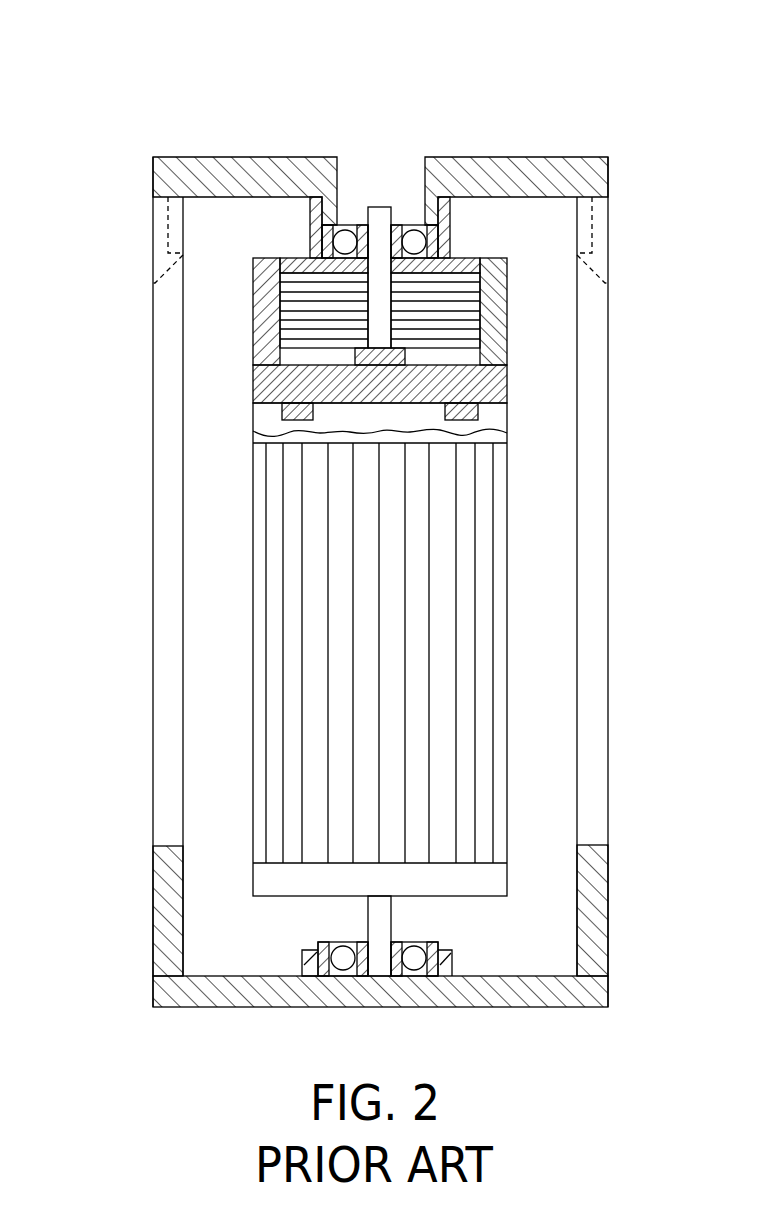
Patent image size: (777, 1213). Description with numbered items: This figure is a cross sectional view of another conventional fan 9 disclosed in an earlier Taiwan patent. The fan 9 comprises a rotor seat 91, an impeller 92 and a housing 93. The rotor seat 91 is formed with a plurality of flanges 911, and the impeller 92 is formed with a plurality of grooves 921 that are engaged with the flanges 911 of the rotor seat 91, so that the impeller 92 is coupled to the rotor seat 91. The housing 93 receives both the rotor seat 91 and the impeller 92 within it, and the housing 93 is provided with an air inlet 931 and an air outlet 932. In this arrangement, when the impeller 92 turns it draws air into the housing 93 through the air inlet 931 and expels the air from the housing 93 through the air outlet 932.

The fan 9 is at (366, 509).
The rotor seat 91 is at (468, 253).
The flanges 911 is at (480, 411).
The impeller 92 is at (482, 649).
The grooves 921 is at (475, 436).
The housing 93 is at (365, 541).
The air inlet 931 is at (593, 559).
The air outlet 932 is at (167, 505).